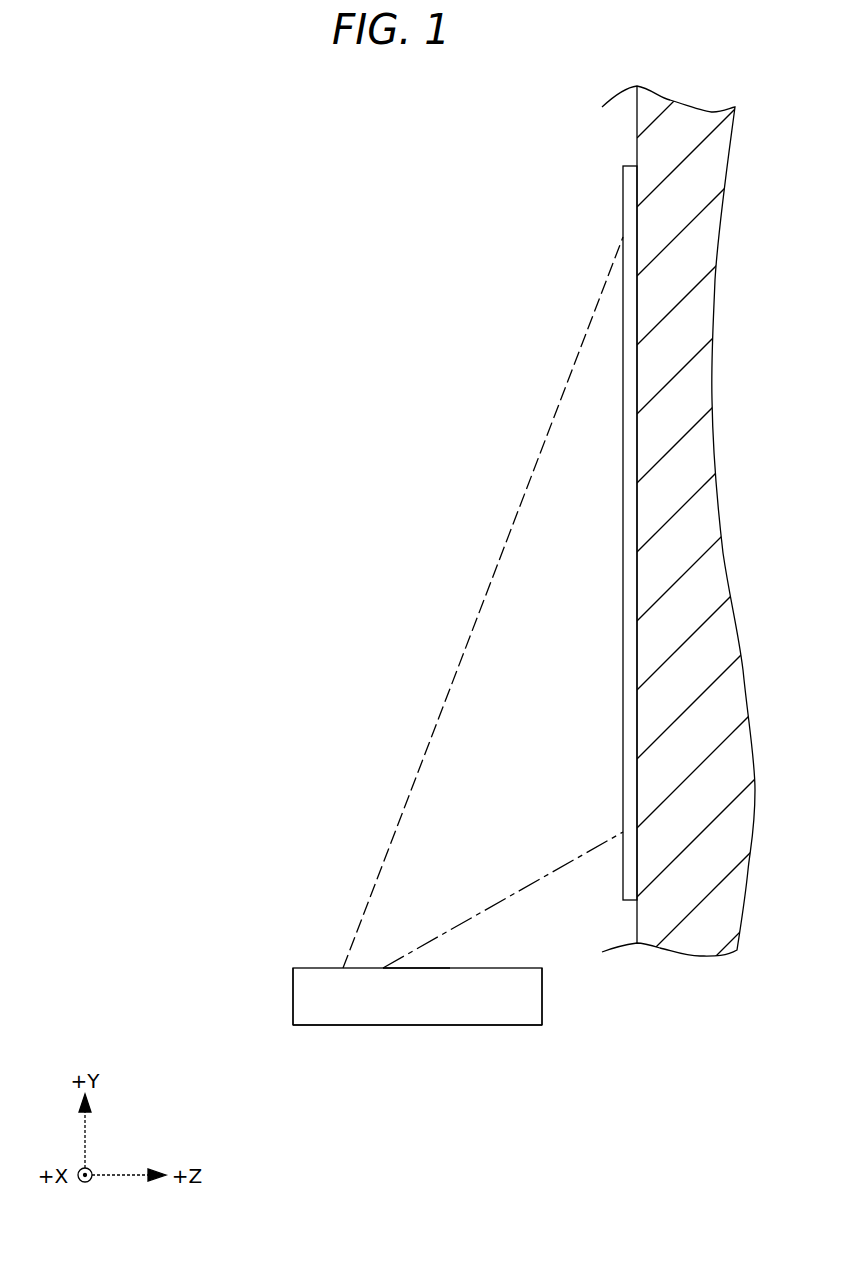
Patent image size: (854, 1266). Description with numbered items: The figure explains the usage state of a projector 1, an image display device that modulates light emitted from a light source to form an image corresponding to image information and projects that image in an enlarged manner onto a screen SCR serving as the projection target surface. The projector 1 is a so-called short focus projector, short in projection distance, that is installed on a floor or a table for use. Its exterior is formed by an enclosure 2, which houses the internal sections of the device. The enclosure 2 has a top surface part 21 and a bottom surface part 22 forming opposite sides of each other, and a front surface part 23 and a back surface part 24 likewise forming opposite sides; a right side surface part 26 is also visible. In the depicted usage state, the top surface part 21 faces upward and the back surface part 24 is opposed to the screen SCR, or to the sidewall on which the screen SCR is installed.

The projector 1 is at (266, 947).
The enclosure 2 is at (504, 968).
The top surface part 21 is at (448, 968).
The bottom surface part 22 is at (470, 1030).
The front surface part 23 is at (293, 986).
The back surface part 24 is at (542, 1006).
The right side surface part 26 is at (360, 1015).
The screen SCR is at (623, 195).